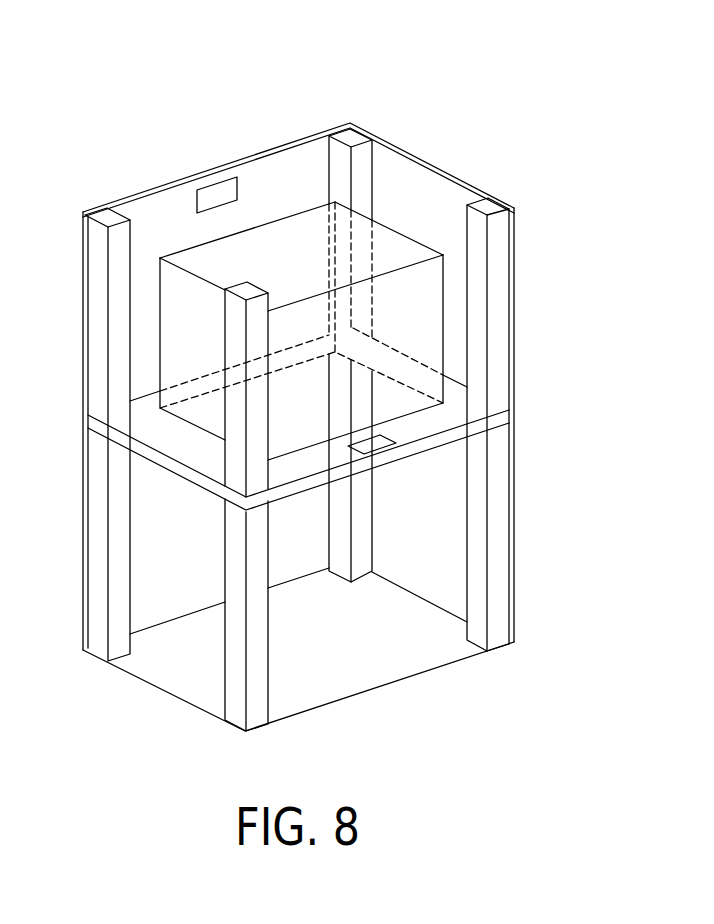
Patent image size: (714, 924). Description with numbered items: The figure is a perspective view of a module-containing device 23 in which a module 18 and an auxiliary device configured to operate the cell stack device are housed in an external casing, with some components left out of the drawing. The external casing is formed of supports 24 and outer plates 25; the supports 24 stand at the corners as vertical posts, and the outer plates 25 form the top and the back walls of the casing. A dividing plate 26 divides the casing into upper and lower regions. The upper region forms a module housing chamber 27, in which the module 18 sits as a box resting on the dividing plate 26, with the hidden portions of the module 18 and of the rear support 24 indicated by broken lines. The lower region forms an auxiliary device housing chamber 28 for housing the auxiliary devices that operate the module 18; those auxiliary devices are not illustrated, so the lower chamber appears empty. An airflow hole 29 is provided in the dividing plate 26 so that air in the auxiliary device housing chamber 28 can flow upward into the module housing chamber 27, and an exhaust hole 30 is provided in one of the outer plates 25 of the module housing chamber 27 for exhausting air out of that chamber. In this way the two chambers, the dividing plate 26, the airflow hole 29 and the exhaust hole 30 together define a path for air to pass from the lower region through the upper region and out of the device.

The module 18 is at (397, 247).
The module-containing device 23 is at (332, 393).
The support 24 is at (107, 213).
The outer plate 25 is at (385, 142).
The dividing plate 26 is at (340, 419).
The module housing chamber 27 is at (405, 188).
The auxiliary device housing chamber 28 is at (206, 428).
The airflow hole 29 is at (380, 443).
The exhaust hole 30 is at (212, 197).